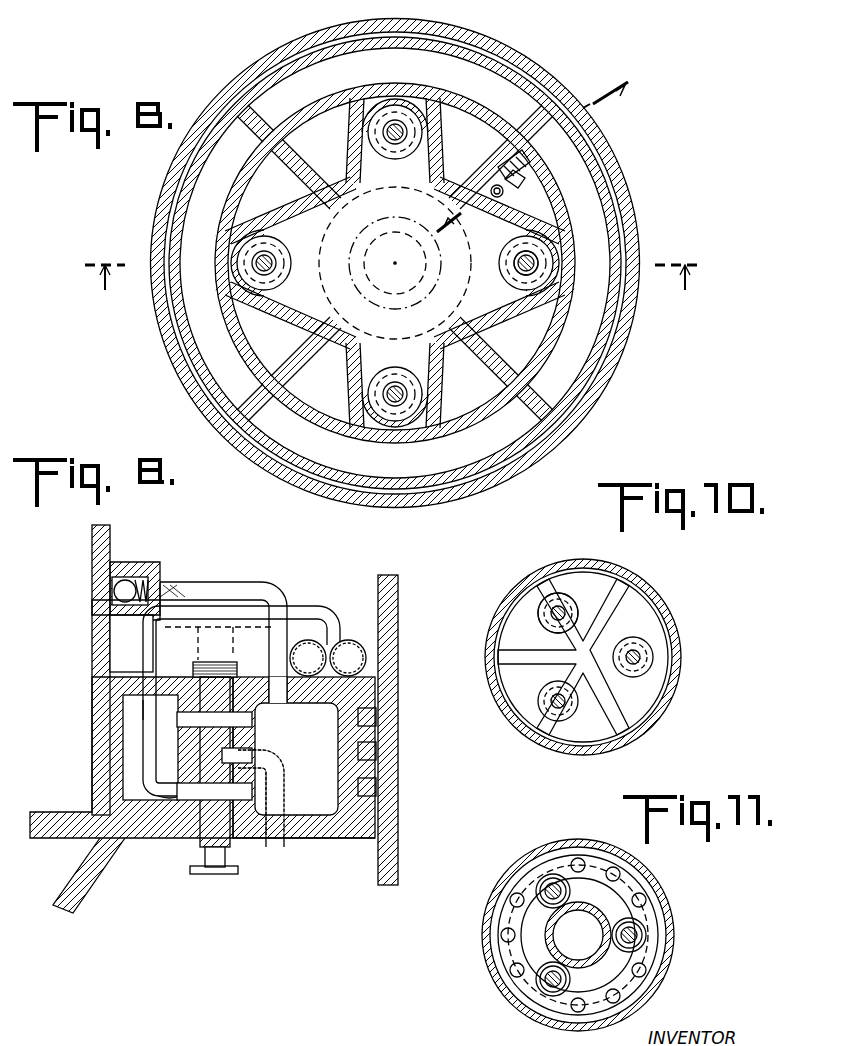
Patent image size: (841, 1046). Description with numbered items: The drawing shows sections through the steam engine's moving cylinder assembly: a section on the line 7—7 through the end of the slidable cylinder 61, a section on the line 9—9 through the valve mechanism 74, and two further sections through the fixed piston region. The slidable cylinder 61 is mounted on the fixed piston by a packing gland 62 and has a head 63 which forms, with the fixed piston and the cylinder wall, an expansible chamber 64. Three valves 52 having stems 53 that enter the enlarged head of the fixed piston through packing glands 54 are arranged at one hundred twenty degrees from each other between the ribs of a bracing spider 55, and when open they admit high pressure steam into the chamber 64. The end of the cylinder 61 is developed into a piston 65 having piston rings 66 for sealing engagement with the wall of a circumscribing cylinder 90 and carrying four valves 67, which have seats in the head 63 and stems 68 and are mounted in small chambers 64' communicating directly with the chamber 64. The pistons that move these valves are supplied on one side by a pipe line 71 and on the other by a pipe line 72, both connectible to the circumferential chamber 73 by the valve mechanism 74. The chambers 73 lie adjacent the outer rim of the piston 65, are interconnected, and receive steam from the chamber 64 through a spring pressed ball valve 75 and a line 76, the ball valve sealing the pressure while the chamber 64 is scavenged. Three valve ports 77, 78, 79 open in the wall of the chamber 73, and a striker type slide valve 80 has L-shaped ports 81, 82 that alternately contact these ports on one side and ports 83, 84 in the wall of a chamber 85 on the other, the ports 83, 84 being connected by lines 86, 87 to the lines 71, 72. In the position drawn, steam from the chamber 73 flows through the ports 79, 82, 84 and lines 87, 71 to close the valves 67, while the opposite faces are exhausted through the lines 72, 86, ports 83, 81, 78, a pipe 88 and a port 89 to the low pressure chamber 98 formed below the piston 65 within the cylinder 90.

In FIG. 8, the section line 7- 7 is at (396, 280).
In FIG. 8, the section line 9- 9 is at (541, 170).
In FIG. 10, the valve 52 is at (572, 590).
In FIG. 10, the valve stem 53 is at (550, 608).
In FIG. 11, the valve stem 53 is at (550, 880).
In FIG. 11, the packing gland 54 is at (580, 860).
In FIG. 10, the bracing spider 55 is at (607, 622).
In FIG. 10, the slidable cylinder 61 is at (672, 700).
In FIG. 11, the slidable cylinder 61 is at (668, 902).
In FIG. 11, the packing gland 62 is at (513, 918).
In FIG. 8, the head 63 is at (355, 235).
In FIG. 8, the expansible chamber 64 is at (395, 263).
In FIG. 9, the expansible chamber 64 is at (53, 557).
In FIG. 8, the small chamber 64' is at (395, 263).
In FIG. 8, the piston 65 is at (585, 158).
In FIG. 9, the piston 65 is at (366, 835).
In FIG. 9, the piston ring 66 is at (378, 722).
In FIG. 8, the valve 67 is at (291, 252).
In FIG. 8, the valve stem 68 is at (524, 275).
In FIG. 9, the pipe line 71 is at (352, 645).
In FIG. 9, the pipe line 72 is at (310, 645).
In FIG. 8, the circumferential chamber 73 is at (226, 199).
In FIG. 9, the circumferential chamber 73 is at (331, 729).
In FIG. 8, the valve mechanism 74 is at (506, 168).
In FIG. 9, the valve mechanism 74 is at (85, 694).
In FIG. 9, the spring pressed ball valve 75 is at (122, 576).
In FIG. 9, the line 76 is at (245, 582).
In FIG. 9, the valve port 77 is at (252, 722).
In FIG. 9, the valve port 78 is at (256, 746).
In FIG. 9, the valve port 79 is at (285, 785).
In FIG. 9, the slide valve 80 is at (207, 876).
In FIG. 9, the port 81 is at (246, 684).
In FIG. 9, the port 82 is at (172, 840).
In FIG. 9, the port 83 is at (131, 716).
In FIG. 9, the port 84 is at (160, 798).
In FIG. 8, the chamber 85 is at (529, 215).
In FIG. 9, the chamber 85 is at (130, 778).
In FIG. 9, the line 86 is at (148, 645).
In FIG. 9, the line 87 is at (327, 618).
In FIG. 9, the pipe 88 is at (288, 800).
In FIG. 9, the port 89 is at (277, 832).
In FIG. 8, the circumscribing cylinder 90 is at (628, 203).
In FIG. 9, the circumscribing cylinder 90 is at (398, 655).
In FIG. 9, the low pressure chamber 98 is at (275, 886).